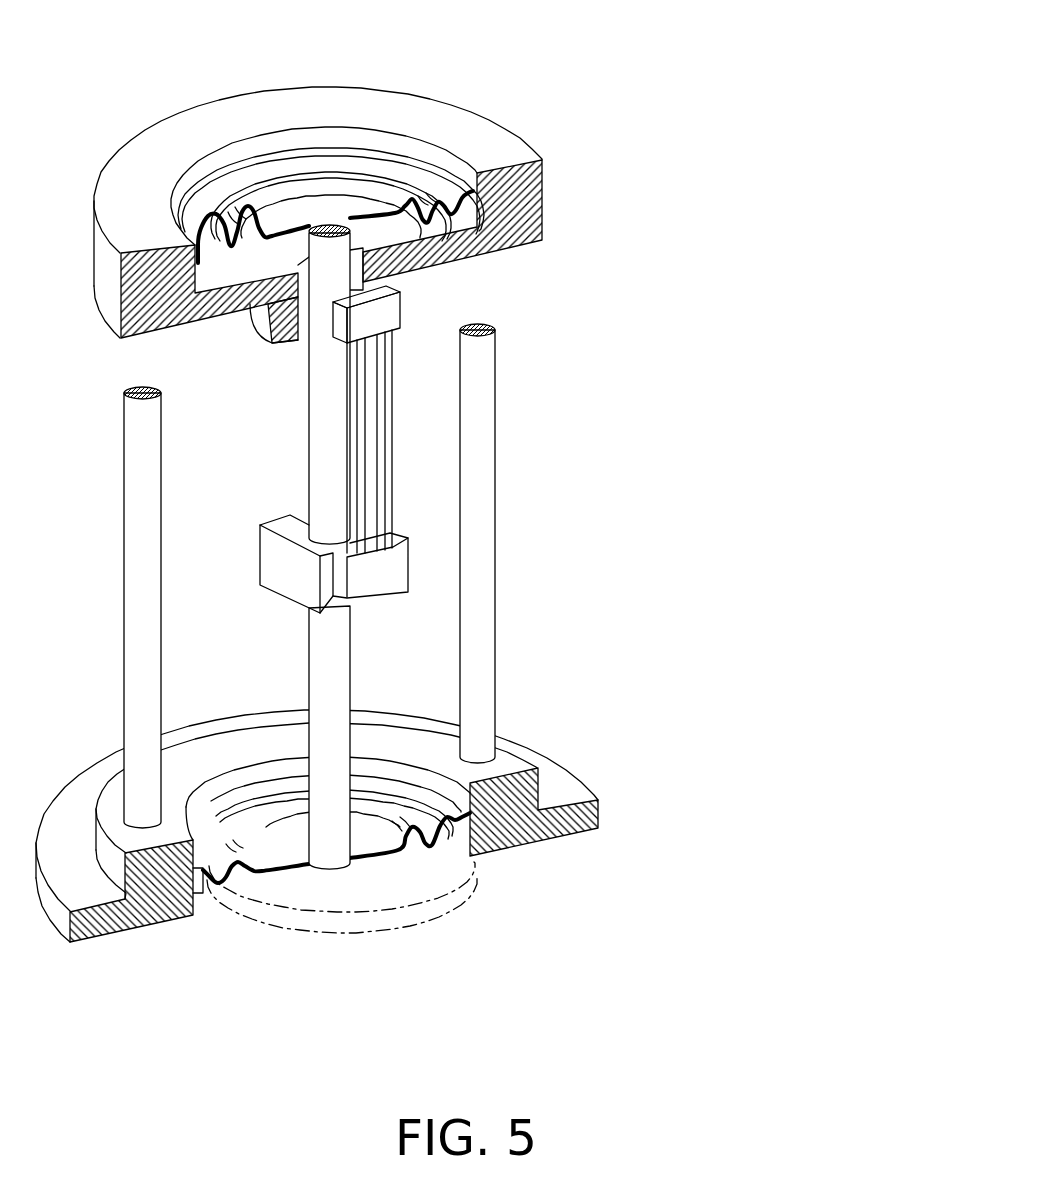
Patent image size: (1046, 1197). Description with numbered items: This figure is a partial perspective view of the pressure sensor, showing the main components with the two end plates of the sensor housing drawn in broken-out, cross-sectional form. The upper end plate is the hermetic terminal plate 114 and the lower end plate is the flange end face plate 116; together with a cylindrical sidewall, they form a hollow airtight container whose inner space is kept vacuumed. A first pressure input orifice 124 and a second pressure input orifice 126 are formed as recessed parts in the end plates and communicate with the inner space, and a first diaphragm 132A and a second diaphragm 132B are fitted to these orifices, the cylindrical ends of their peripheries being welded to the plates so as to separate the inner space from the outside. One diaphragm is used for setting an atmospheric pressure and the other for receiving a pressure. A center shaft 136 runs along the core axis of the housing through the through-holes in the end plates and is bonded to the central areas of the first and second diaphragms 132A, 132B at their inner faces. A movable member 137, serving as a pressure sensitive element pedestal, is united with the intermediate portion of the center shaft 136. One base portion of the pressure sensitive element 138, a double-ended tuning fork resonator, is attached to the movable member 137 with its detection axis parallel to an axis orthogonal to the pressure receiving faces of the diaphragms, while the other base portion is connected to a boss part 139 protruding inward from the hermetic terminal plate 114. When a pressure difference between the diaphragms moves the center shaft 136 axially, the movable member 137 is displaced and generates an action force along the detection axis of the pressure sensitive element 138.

The hermetic terminal plate 114 is at (503, 142).
The flange end face plate 116 is at (517, 835).
The first pressure input orifice 124 is at (203, 902).
The second pressure input orifice 126 is at (218, 162).
The first diaphragm 132A is at (372, 843).
The second diaphragm 132B is at (330, 197).
The center shaft 136 is at (352, 678).
The movable member 137 is at (267, 558).
The pressure sensitive element 138 is at (400, 412).
The boss part 139 is at (255, 330).